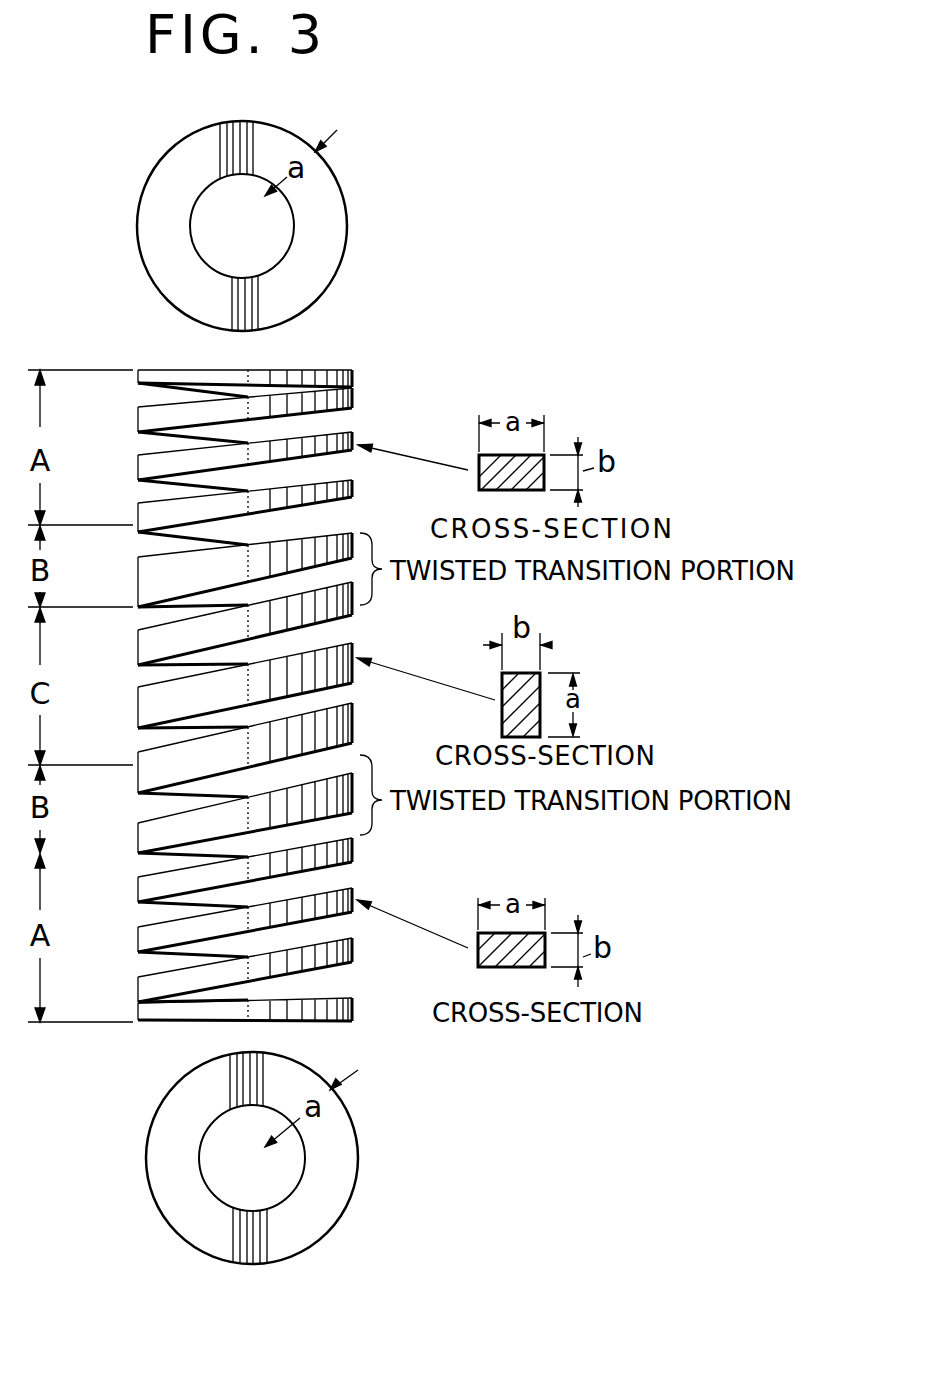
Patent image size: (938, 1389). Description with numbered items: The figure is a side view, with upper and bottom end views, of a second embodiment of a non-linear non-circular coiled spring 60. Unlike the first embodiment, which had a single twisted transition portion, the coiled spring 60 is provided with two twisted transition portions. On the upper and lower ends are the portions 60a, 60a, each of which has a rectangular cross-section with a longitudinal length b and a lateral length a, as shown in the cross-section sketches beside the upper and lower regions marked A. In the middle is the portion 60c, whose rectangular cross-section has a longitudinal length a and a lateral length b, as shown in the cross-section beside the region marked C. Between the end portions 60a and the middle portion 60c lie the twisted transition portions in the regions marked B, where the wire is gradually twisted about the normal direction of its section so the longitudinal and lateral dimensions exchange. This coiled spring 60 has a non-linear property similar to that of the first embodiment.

The coiled spring 60 is at (358, 380).
The portion 60a is at (137, 422).
The portion 60c is at (160, 700).